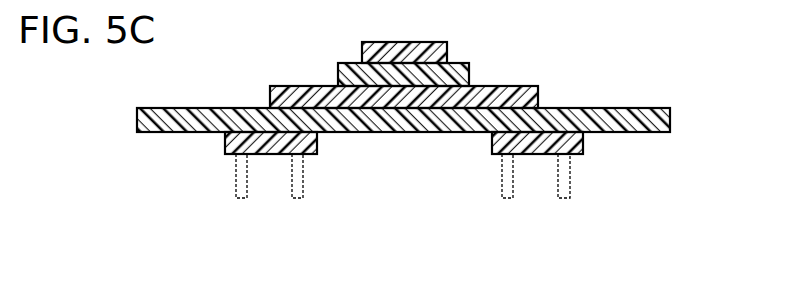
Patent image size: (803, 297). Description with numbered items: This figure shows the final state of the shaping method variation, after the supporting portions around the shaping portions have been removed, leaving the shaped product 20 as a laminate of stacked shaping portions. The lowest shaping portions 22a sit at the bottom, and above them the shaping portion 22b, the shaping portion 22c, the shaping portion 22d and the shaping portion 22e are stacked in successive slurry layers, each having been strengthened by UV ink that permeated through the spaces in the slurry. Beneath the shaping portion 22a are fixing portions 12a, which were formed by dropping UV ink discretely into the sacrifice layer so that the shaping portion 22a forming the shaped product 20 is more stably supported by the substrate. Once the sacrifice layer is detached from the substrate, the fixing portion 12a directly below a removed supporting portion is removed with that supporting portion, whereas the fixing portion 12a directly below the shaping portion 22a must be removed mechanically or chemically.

The shaped product 20 is at (646, 47).
The shaping portion 22b is at (656, 108).
The shaping portion 22c is at (538, 97).
The shaping portion 22d is at (469, 75).
The shaping portion 22e is at (447, 52).
The shaping portion 22a is at (317, 145).
The fixing portion 12a is at (235, 180).